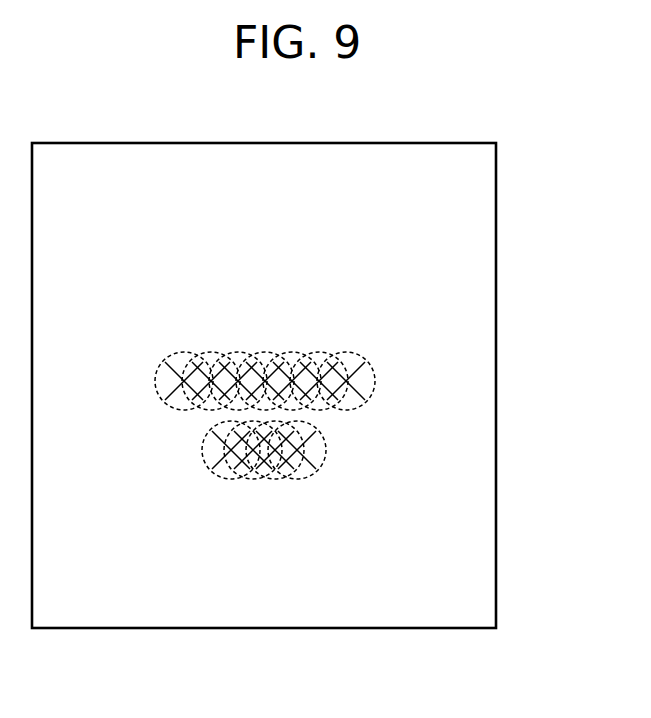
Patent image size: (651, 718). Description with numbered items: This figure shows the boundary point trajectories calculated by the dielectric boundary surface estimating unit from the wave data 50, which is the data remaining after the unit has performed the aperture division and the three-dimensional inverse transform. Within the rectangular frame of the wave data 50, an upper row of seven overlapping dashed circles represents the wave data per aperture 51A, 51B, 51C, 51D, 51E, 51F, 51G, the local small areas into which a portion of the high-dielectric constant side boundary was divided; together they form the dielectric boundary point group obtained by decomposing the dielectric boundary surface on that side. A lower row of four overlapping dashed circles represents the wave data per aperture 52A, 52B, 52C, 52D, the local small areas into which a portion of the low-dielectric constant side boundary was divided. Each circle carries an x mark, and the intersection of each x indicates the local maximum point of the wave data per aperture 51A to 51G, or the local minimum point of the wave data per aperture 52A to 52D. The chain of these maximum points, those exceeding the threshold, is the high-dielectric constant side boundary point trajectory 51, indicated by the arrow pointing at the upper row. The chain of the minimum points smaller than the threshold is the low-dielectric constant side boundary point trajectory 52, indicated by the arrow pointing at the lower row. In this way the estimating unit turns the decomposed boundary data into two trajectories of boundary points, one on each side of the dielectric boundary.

The wave data 50 is at (90, 143).
The high-dielectric constant side boundary point trajectory 51 is at (371, 319).
The wave data per aperture 51A is at (175, 352).
The wave data per aperture 51B is at (210, 352).
The wave data per aperture 51C is at (237, 352).
The wave data per aperture 51D is at (263, 352).
The wave data per aperture 51E is at (290, 352).
The wave data per aperture 51F is at (322, 352).
The wave data per aperture 51G is at (373, 362).
The low-dielectric constant side boundary point trajectory 52 is at (287, 555).
The wave data per aperture 52A is at (218, 480).
The wave data per aperture 52B is at (250, 480).
The wave data per aperture 52C is at (282, 480).
The wave data per aperture 52D is at (349, 466).